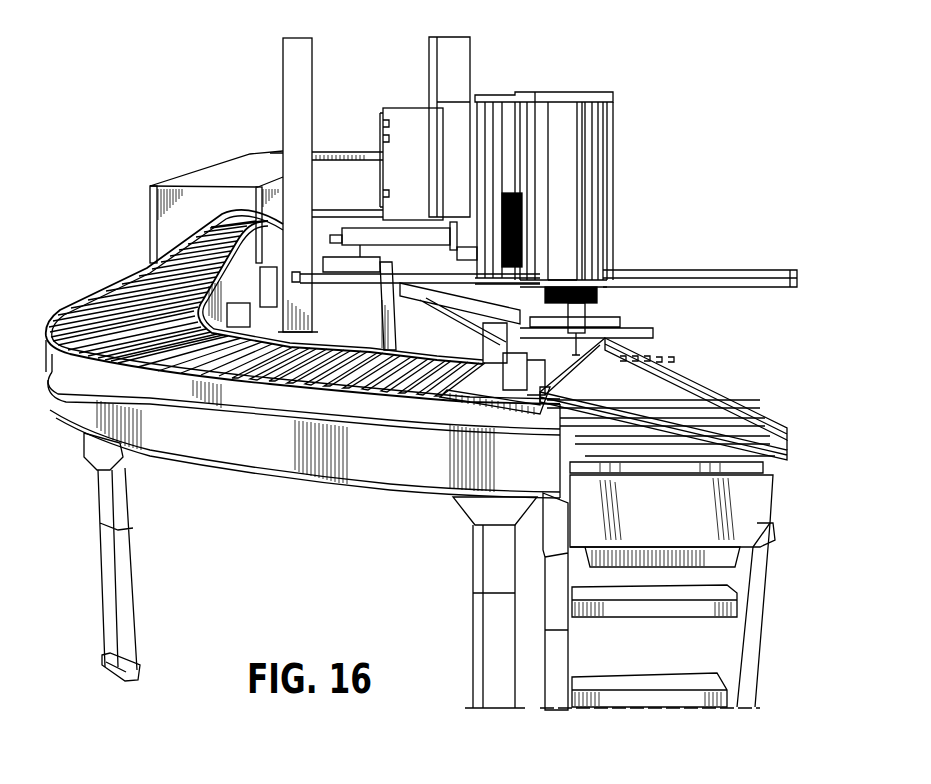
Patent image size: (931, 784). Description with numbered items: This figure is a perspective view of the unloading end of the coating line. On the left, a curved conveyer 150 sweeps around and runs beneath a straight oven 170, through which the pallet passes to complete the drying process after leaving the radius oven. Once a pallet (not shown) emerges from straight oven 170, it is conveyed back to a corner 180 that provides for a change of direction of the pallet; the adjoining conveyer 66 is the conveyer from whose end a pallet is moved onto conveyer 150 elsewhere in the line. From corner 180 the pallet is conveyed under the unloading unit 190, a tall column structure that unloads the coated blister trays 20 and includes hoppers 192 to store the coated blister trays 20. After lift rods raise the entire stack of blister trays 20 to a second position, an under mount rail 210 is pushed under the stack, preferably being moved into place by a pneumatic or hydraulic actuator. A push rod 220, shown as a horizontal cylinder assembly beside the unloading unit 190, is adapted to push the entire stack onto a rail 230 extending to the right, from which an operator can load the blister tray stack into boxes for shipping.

The conveyer 150 is at (257, 400).
The straight oven 170 is at (150, 200).
The push rod 220 is at (360, 240).
The unloading unit 190 is at (575, 92).
The hoppers 192 is at (555, 175).
The under mount rail 210 is at (513, 267).
The rail 230 is at (703, 277).
The blister tray 20 is at (597, 298).
The corner 180 is at (663, 355).
The conveyer 66 is at (623, 420).